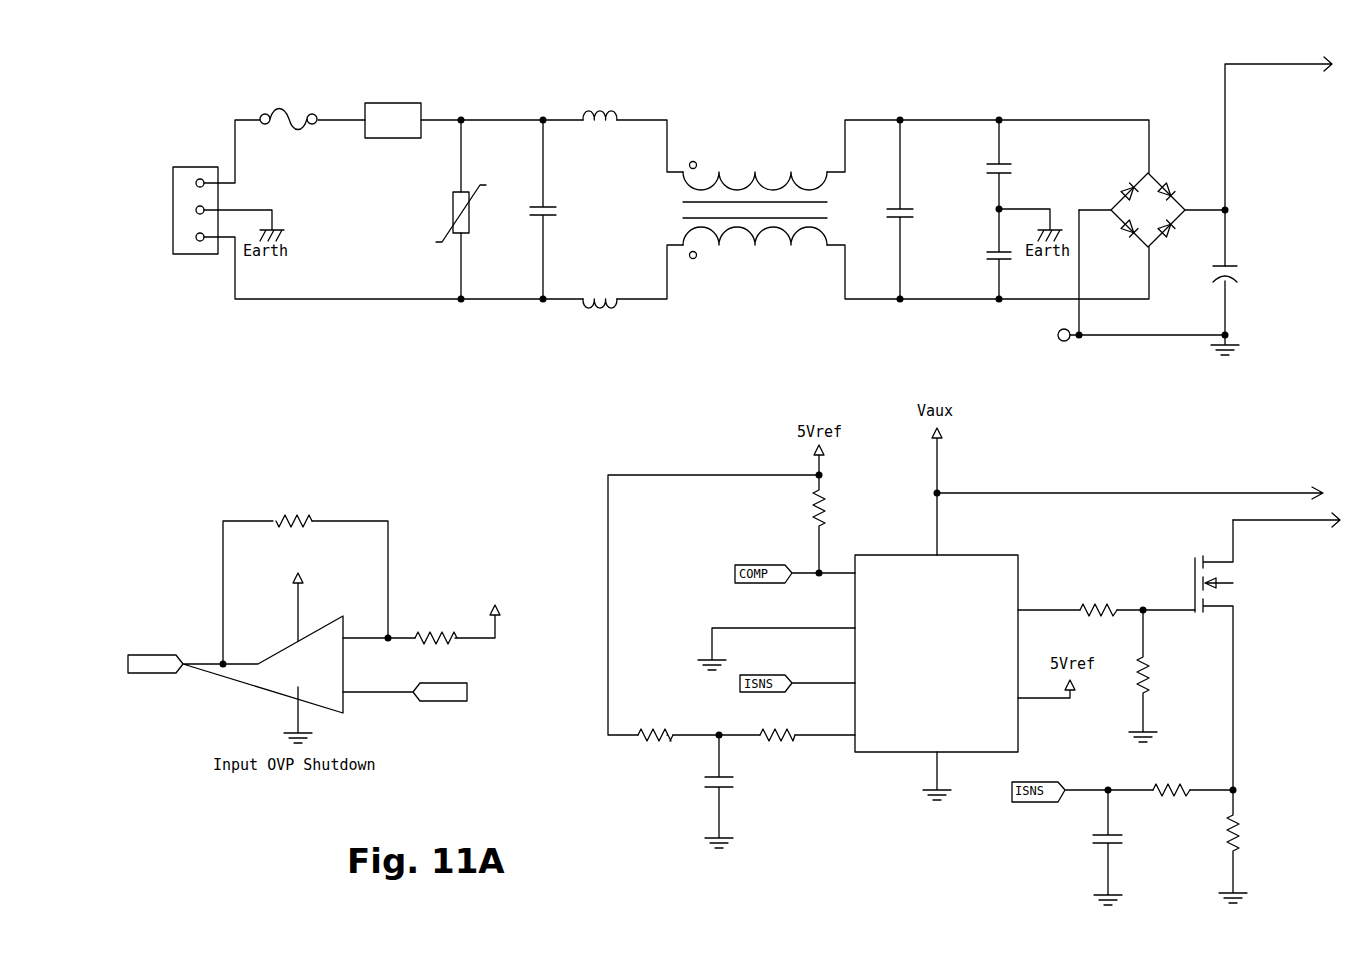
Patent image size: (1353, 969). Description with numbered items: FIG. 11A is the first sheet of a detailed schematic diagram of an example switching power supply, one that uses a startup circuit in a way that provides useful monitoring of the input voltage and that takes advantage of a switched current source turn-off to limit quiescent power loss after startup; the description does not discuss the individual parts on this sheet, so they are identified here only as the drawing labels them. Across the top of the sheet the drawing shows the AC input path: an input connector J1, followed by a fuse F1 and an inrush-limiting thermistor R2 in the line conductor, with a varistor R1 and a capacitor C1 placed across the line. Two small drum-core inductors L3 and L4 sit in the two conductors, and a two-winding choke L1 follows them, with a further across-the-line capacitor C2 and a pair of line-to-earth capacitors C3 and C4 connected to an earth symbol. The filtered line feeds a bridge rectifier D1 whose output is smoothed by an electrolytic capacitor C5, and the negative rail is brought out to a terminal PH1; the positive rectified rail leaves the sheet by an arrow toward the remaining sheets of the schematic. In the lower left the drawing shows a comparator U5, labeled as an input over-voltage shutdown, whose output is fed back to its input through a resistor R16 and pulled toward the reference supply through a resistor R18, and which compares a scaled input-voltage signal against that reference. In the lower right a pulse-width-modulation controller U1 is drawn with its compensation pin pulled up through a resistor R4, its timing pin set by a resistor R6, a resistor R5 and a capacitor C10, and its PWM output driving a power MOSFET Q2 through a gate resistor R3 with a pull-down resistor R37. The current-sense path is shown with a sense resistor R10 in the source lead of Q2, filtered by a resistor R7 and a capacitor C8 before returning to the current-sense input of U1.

The AC input connector Qualtek 771W-BX2/01 J1 is at (177, 212).
The fuse Bel RST 1.6 F1 is at (289, 125).
The NTC inrush thermistor 2.5R/5A R2 is at (391, 122).
The MOV varistor VDRS07H275xyE R1 is at (457, 209).
The X2 capacitor 0.47uF C1 is at (536, 209).
The 47uH drum core inductor L3 is at (600, 114).
The 47uH drum core inductor L4 is at (600, 312).
The common mode choke Wurth 750311344 L1 is at (751, 226).
The X2 capacitor 0.47uF C2 is at (893, 209).
The Y2 capacitor 4700pF C3 is at (980, 193).
The Y2 capacitor 4700pF C4 is at (991, 222).
The bridge rectifier Vishay 2KBP06M D1 is at (1122, 196).
The bulk capacitor 82uF 400V C5 is at (1209, 274).
The primary ground test point PH1 is at (1055, 277).
The comparator LM393 U5 is at (321, 643).
The feedback resistor 332K R16 is at (305, 570).
The pull-up resistor 1.00K R18 is at (430, 638).
The PWM controller ISL6842 U1 is at (935, 656).
The pull-up resistor 10.0K R4 is at (845, 524).
The timing resistor 10.0K R6 is at (656, 735).
The resistor 100 R5 is at (777, 737).
The timing capacitor 3300pF C10 is at (692, 791).
The gate resistor 10.0 R3 is at (1098, 613).
The gate pull-down resistor 10.0K R37 is at (1164, 676).
The power MOSFET TK13A65U Q2 is at (1274, 655).
The current sense filter resistor 221 R7 is at (1171, 791).
The current sense filter capacitor 100pF C8 is at (1081, 847).
The current sense resistor 0.43 Ohm R10 is at (1269, 846).